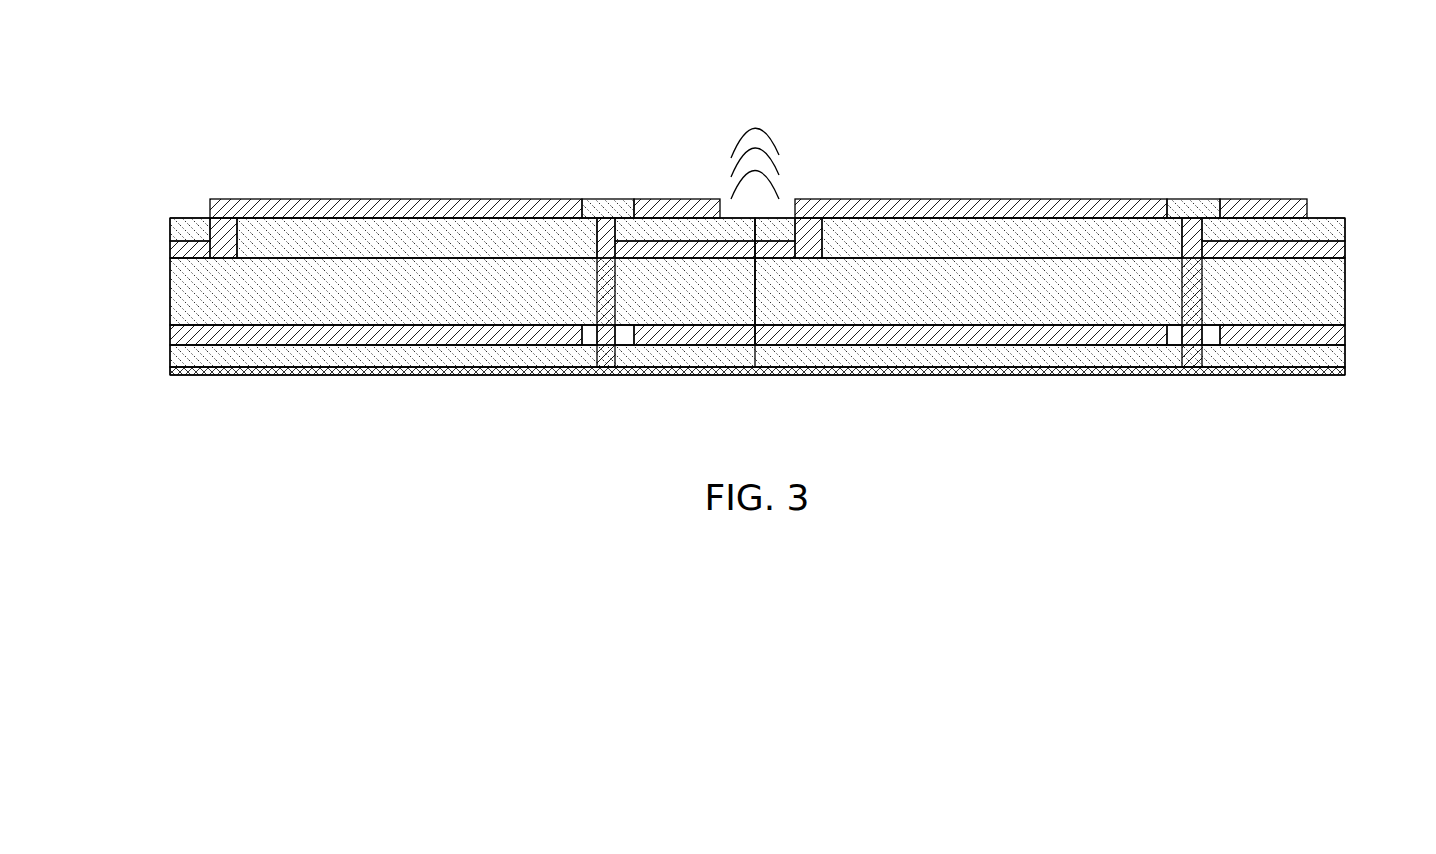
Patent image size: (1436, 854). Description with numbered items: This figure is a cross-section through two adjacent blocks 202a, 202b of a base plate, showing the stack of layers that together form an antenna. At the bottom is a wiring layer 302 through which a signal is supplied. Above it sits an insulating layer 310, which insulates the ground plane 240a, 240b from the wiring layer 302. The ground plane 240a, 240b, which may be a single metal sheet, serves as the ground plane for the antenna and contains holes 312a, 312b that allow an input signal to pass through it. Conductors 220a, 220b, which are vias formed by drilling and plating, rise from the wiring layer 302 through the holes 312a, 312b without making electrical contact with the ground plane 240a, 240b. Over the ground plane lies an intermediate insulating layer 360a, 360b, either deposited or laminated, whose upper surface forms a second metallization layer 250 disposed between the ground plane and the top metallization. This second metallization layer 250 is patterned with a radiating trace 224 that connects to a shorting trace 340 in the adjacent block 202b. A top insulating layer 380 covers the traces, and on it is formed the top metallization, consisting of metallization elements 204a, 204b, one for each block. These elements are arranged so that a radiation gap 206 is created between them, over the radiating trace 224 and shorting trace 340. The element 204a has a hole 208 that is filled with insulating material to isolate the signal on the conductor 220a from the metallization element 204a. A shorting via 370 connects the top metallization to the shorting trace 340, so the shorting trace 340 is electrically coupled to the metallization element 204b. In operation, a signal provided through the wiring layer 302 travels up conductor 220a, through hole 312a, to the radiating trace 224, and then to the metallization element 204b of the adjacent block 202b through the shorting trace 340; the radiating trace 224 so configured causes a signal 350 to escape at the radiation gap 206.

The block 202a is at (297, 153).
The block 202b is at (958, 163).
The top metallization element 204a is at (457, 208).
The top metallization element 204b is at (855, 200).
The radiation gap 206 is at (782, 178).
The hole 208 is at (607, 185).
The signal 350 is at (745, 122).
The shorting via 370 is at (228, 224).
The top insulating layer 380 is at (1005, 235).
The intermediate insulating layer 360a is at (410, 275).
The intermediate insulating layer 360b is at (1108, 275).
The shorting trace 340 is at (178, 252).
The radiating trace 224 is at (680, 250).
The conductor 220a is at (603, 357).
The conductor 220b is at (1188, 360).
The ground plane 240a is at (235, 333).
The ground plane 240b is at (992, 338).
The hole 312a is at (587, 347).
The hole 312b is at (1210, 332).
The insulating layer 310 is at (180, 360).
The wiring layer 302 is at (332, 372).
The second metallization layer 250 is at (257, 262).